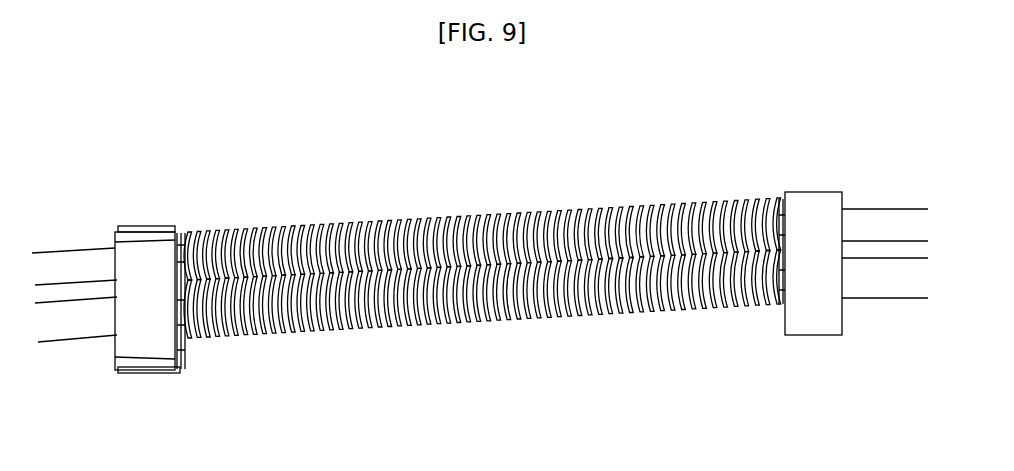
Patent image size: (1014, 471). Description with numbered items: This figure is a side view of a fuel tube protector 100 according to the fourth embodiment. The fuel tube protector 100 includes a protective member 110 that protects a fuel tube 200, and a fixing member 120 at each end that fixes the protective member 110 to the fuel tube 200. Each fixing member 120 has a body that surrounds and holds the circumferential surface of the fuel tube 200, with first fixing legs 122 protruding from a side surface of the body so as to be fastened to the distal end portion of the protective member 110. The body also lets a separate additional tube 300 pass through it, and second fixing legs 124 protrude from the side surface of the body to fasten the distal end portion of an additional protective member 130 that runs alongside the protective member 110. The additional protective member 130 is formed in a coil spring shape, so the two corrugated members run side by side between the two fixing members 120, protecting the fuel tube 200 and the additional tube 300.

The fuel tube protector 100 is at (348, 182).
The protective member 110 is at (452, 212).
The additional protective member 130 is at (452, 325).
The fixing member 120 is at (140, 222).
The first fixing legs 122 is at (185, 230).
The second fixing legs 124 is at (188, 342).
The fuel tube 200 is at (882, 209).
The additional tube 300 is at (887, 298).